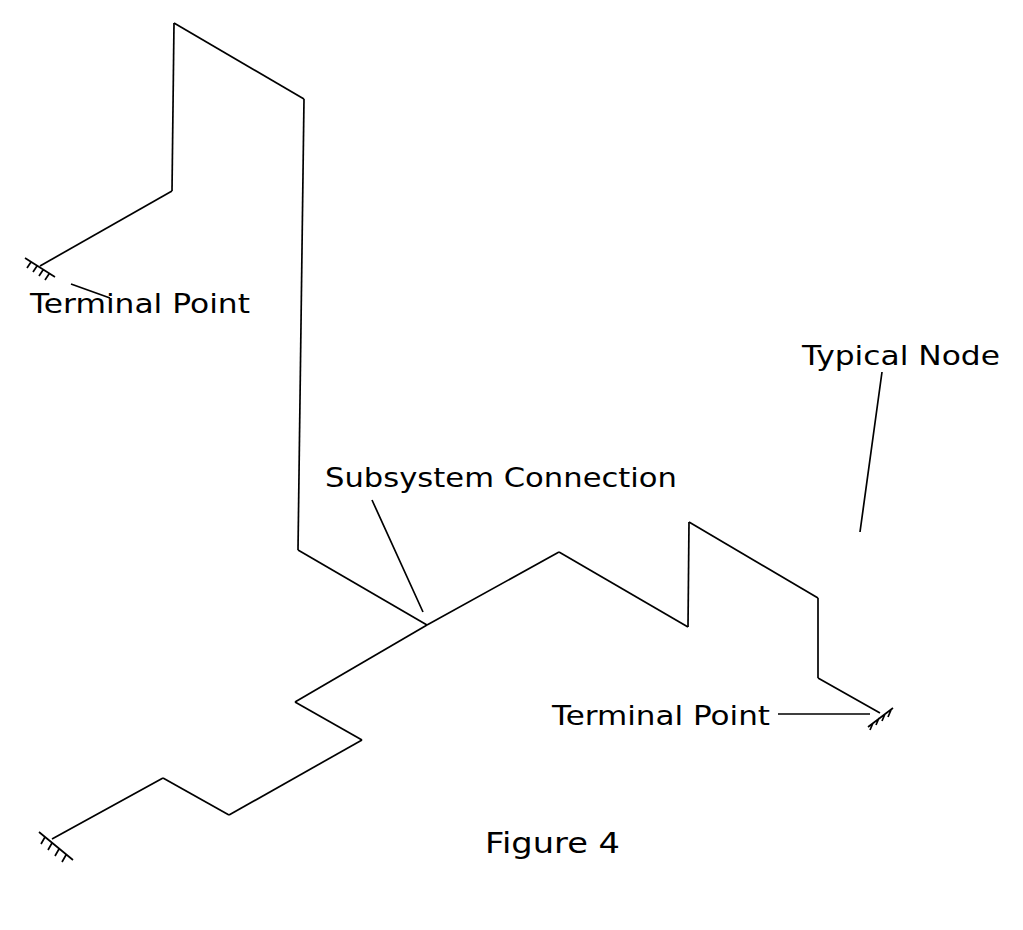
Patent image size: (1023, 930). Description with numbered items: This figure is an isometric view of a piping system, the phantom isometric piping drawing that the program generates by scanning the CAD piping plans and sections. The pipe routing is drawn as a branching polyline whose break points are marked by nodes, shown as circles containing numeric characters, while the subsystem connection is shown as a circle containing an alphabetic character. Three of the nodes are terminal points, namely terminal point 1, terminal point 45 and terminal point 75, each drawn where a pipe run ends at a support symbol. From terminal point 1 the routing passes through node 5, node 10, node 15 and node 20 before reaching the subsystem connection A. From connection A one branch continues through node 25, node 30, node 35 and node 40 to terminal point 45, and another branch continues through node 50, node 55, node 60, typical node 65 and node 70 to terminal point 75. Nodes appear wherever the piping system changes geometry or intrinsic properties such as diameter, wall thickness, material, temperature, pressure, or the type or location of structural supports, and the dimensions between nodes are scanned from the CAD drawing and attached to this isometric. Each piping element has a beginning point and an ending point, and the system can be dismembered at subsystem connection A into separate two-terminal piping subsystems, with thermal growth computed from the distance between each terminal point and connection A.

The terminal point 1 is at (40, 247).
The node 5 is at (183, 194).
The node 10 is at (190, 43).
The node 15 is at (316, 100).
The node 20 is at (285, 555).
The subsystem connection A is at (405, 622).
The node 25 is at (287, 695).
The node 30 is at (373, 740).
The node 35 is at (232, 804).
The node 40 is at (159, 766).
The terminal point 45 is at (53, 826).
The node 50 is at (558, 562).
The node 55 is at (688, 630).
The node 60 is at (697, 515).
The typical node 65 is at (831, 589).
The node 70 is at (830, 670).
The terminal point 75 is at (878, 723).